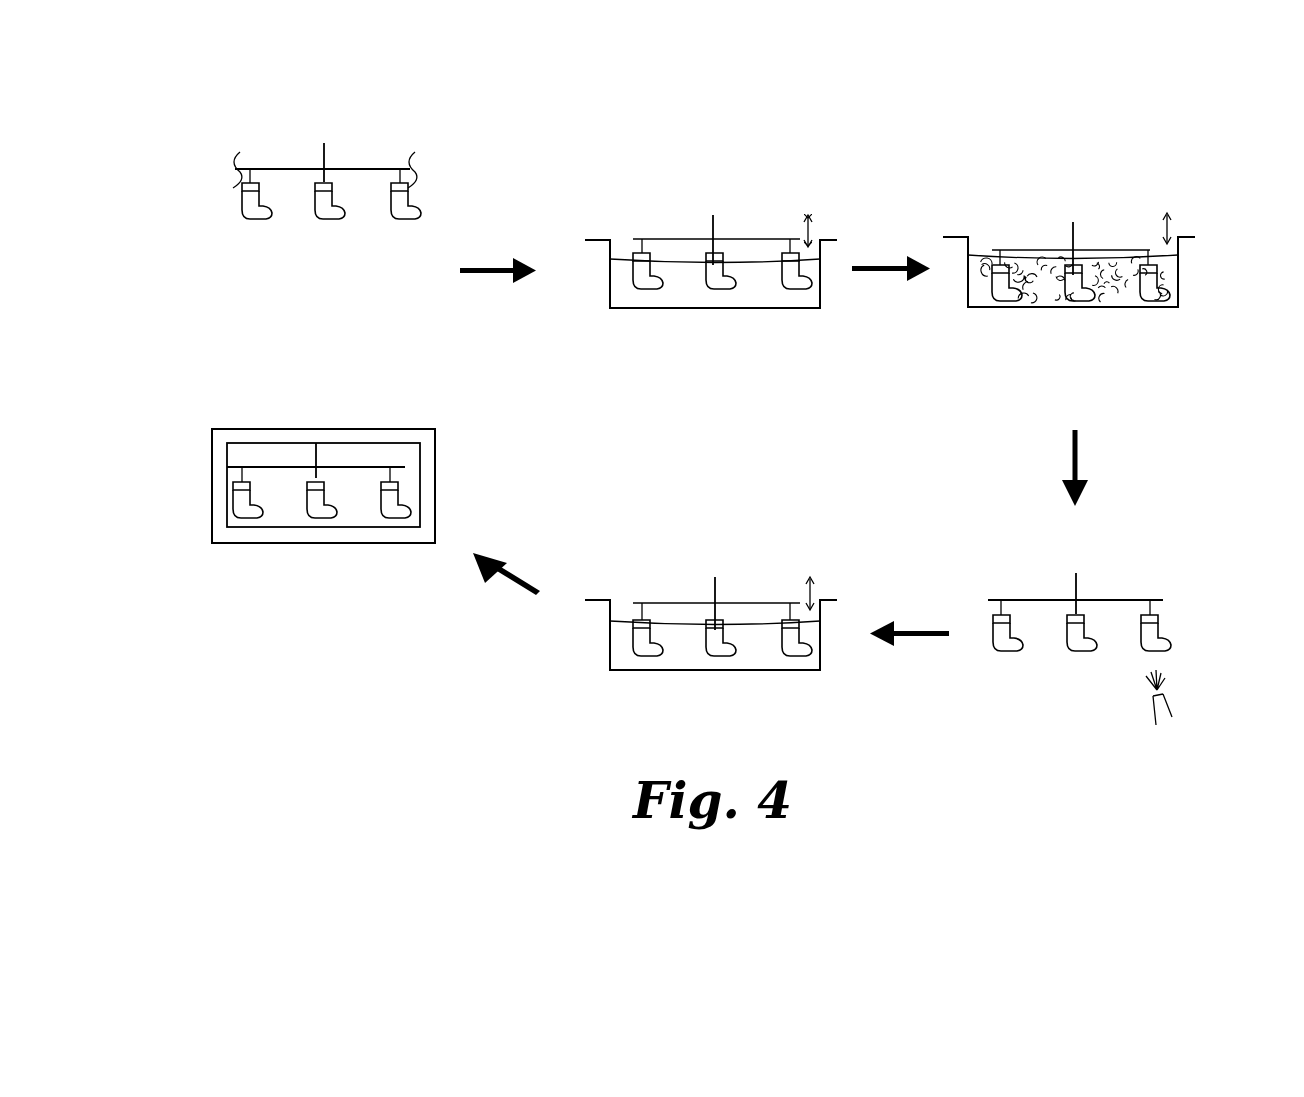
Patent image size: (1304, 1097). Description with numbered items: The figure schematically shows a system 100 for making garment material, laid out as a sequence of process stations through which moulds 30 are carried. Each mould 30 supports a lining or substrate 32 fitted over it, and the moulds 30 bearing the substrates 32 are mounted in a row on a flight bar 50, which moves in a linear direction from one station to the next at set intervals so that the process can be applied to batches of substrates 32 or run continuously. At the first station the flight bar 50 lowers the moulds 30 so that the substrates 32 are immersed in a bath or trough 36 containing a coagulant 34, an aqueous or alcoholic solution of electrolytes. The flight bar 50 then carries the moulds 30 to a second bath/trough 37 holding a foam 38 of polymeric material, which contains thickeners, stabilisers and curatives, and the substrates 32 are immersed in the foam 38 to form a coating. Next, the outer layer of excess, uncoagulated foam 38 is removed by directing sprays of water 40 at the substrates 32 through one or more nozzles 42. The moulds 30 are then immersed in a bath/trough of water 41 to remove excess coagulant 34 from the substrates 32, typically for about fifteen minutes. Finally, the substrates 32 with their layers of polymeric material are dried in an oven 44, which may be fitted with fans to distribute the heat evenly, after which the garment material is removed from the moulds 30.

The system 100 is at (743, 457).
The flight bar 50 is at (352, 168).
The mould 30 is at (410, 191).
The substrate 32 is at (405, 219).
The coagulant 34 is at (806, 293).
The bath or trough 36 is at (697, 308).
The bath/trough 37 is at (1048, 308).
The foam 38 is at (1179, 297).
The spray of water 40 is at (1165, 687).
The nozzle 42 is at (1173, 713).
The bath/trough of water 41 is at (812, 668).
The oven 44 is at (228, 428).